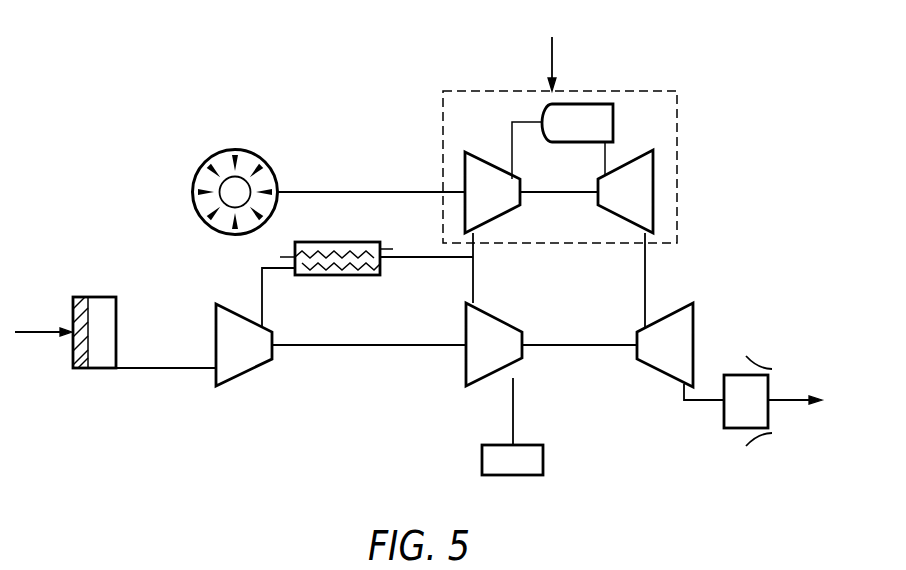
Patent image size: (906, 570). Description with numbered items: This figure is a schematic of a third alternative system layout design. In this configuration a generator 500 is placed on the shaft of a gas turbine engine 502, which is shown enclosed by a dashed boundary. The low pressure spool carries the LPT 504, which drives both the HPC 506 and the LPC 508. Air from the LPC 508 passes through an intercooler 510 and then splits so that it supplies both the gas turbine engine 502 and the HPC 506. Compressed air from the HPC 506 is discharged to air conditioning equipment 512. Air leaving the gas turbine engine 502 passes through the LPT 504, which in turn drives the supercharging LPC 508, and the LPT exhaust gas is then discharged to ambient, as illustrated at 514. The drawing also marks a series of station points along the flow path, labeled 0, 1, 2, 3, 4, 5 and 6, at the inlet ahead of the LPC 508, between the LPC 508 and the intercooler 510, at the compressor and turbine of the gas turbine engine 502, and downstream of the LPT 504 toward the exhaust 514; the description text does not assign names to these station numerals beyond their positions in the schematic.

The ambient air inlet station 0 is at (43, 305).
The inlet / air filter 1 is at (94, 332).
The low pressure compressor discharge station 2 is at (247, 297).
The gas generator compressor discharge station 3 is at (517, 150).
The gas generator turbine inlet station 4 is at (616, 158).
The low pressure turbine exhaust station 5 is at (704, 406).
The exhaust outlet station 6 is at (795, 380).
The generator 500 is at (192, 192).
The gas turbine engine 502 is at (610, 131).
The LPT 504 is at (663, 374).
The HPC 506 is at (466, 365).
The LPC 508 is at (243, 373).
The intercooler 510 is at (338, 242).
The air conditioning equipment 512 is at (482, 460).
The LPT exhaust gas discharge to ambient 514 is at (724, 413).